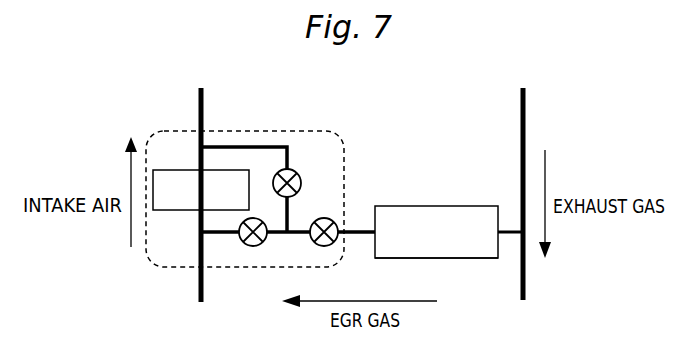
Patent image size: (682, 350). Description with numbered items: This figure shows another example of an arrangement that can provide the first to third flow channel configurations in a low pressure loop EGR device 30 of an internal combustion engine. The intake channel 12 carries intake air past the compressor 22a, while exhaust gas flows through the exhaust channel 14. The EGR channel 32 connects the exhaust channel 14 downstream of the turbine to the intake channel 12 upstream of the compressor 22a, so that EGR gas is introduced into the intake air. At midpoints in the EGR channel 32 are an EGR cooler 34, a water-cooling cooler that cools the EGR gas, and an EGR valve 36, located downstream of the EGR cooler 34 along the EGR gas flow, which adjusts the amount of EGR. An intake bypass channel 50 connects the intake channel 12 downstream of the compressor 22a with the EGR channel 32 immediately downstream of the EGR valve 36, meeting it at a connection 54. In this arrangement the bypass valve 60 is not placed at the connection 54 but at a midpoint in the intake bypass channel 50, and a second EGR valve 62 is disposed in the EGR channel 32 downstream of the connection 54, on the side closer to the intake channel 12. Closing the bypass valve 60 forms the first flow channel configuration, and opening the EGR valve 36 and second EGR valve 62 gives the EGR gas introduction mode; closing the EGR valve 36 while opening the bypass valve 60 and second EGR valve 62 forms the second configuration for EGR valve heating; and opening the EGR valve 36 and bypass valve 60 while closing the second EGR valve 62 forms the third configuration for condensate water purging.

The intake channel 12 is at (199, 289).
The exhaust channel 14 is at (526, 129).
The compressor 22a is at (175, 170).
The EGR device 30 is at (448, 184).
The EGR channel 32 is at (508, 235).
The EGR cooler 34 is at (462, 259).
The EGR valve 36 is at (330, 218).
The intake bypass channel 50 is at (248, 146).
The connection 54 is at (287, 240).
The bypass valve 60 is at (297, 172).
The second EGR valve 62 is at (251, 246).